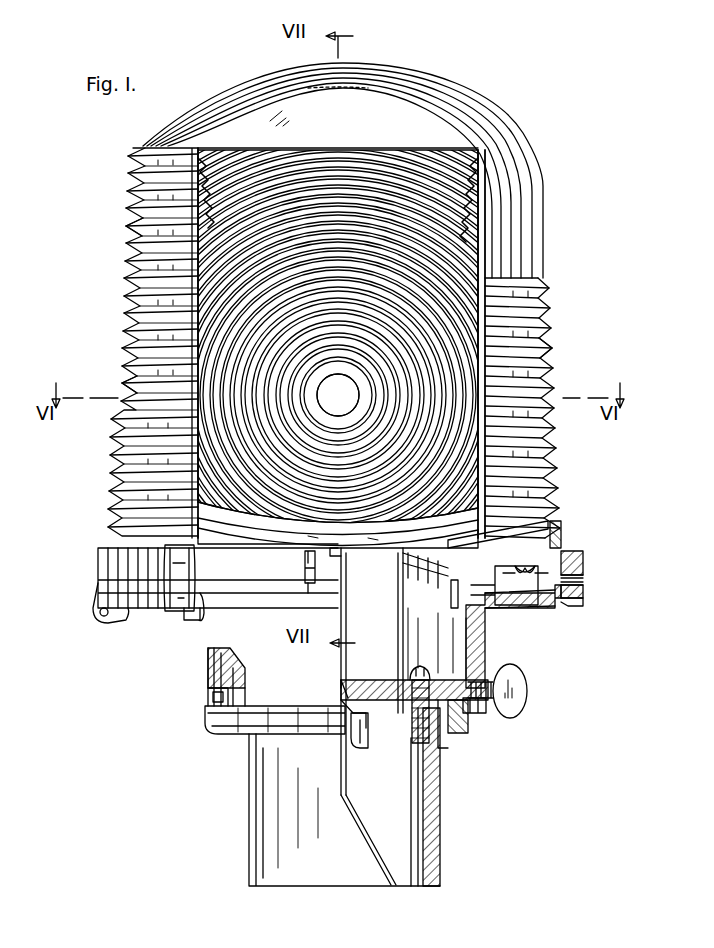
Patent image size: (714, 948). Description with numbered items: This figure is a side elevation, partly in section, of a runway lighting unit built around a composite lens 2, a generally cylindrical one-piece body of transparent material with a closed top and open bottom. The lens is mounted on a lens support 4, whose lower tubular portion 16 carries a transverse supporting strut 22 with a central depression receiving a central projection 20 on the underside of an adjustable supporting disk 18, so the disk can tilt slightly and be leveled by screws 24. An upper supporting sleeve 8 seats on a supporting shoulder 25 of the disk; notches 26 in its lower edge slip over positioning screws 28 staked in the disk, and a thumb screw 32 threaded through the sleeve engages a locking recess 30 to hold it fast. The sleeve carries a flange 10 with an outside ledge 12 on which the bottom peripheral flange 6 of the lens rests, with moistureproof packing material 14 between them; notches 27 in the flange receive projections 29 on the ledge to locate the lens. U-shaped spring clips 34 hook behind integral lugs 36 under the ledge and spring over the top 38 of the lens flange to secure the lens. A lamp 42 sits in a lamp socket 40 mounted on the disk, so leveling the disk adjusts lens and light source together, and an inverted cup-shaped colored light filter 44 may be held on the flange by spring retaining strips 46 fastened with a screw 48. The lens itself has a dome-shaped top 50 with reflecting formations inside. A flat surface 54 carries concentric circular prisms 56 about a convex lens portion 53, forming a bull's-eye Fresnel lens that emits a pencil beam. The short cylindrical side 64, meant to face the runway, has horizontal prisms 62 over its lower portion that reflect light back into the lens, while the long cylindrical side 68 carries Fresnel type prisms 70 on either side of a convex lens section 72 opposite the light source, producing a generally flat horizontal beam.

The composite lens 2 is at (84, 300).
The lens support 4 is at (156, 716).
The bottom peripheral flange 6 is at (586, 555).
The upper supporting sleeve 8 is at (488, 640).
The flange 10 is at (520, 600).
The ledge 12 is at (583, 590).
The moistureproof packing material 14 is at (594, 571).
The lower tubular portion 16 is at (432, 797).
The adjustable supporting disk 18 is at (354, 672).
The central projection 20 is at (334, 690).
The supporting strut 22 is at (346, 742).
The screws 24 is at (412, 658).
The supporting shoulder 25 is at (468, 728).
The notches 26 is at (198, 679).
The notches 27 is at (296, 546).
The positioning screws 28 is at (203, 698).
The projections 29 is at (302, 586).
The locking recess 30 is at (470, 705).
The thumb screw 32 is at (530, 680).
The spring clips 34 is at (166, 600).
The integral lugs 36 is at (191, 612).
The top of flange 38 is at (90, 540).
The lamp socket 40 is at (365, 577).
The lamp 42 is at (432, 530).
The colored light filter 44 is at (541, 511).
The spring retaining strips 46 is at (554, 528).
The screw 48 is at (553, 545).
The dome-shaped top 50 is at (278, 66).
The convex lens portion 53 is at (340, 395).
The flat surface 54 is at (470, 232).
The concentric circular prisms 56 is at (470, 198).
The prisms 62 is at (541, 280).
The short cylindrical side 64 is at (587, 339).
The long cylindrical side 68 is at (118, 218).
The Fresnel type prisms 70 is at (122, 155).
The convex lens section 72 is at (114, 383).